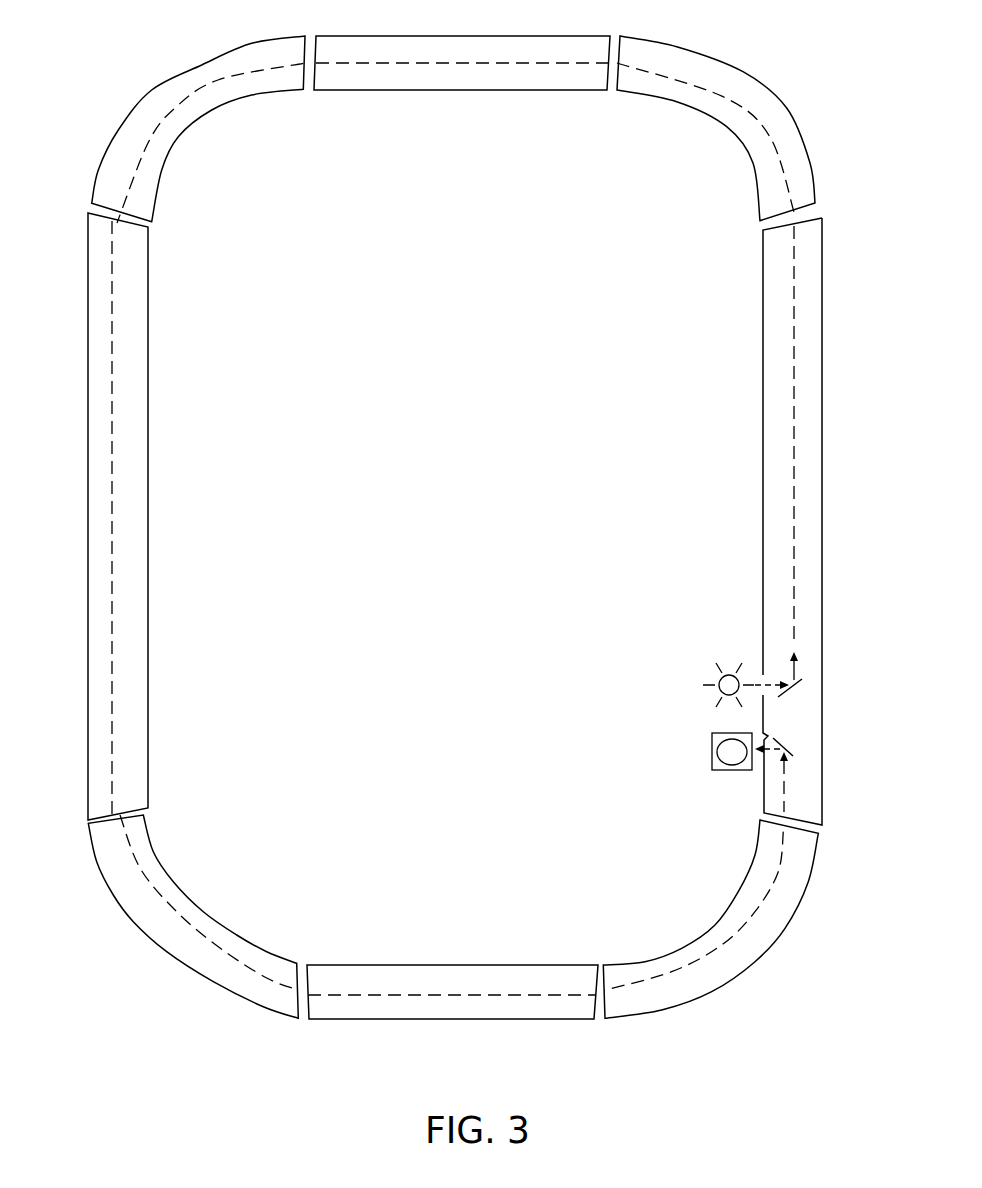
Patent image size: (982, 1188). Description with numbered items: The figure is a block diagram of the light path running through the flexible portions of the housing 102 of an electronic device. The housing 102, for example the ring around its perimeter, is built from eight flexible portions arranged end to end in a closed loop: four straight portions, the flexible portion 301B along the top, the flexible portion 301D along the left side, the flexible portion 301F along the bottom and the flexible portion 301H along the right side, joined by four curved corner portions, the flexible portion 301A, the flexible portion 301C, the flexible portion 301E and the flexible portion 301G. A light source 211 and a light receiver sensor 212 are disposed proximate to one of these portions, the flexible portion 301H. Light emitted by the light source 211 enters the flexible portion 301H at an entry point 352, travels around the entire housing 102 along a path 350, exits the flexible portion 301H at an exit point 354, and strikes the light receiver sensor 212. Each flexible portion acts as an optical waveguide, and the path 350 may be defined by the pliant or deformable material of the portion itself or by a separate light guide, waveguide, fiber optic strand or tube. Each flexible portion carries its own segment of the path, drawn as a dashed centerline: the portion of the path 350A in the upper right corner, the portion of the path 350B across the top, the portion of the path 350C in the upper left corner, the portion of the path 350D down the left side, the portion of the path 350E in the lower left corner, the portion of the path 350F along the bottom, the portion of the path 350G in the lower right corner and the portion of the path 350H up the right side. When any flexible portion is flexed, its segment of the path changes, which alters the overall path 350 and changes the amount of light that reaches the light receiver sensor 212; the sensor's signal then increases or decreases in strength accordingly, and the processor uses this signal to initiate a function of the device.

The housing 102 is at (458, 551).
The light source 211 is at (710, 676).
The light receiver sensor 212 is at (712, 734).
The flexible portion 301A is at (787, 112).
The flexible portion 301B is at (463, 90).
The flexible portion 301C is at (180, 140).
The flexible portion 301D is at (87, 582).
The flexible portion 301E is at (133, 923).
The flexible portion 301F is at (512, 1020).
The flexible portion 301G is at (757, 964).
The flexible portion 301H is at (823, 570).
The path 350 is at (458, 551).
The portion of the path 350A is at (725, 94).
The portion of the path 350B is at (338, 65).
The portion of the path 350C is at (179, 105).
The portion of the path 350D is at (110, 302).
The portion of the path 350E is at (209, 902).
The portion of the path 350F is at (375, 998).
The portion of the path 350G is at (643, 982).
The portion of the path 350H is at (797, 265).
The entry point 352 is at (757, 675).
The exit point 354 is at (758, 765).